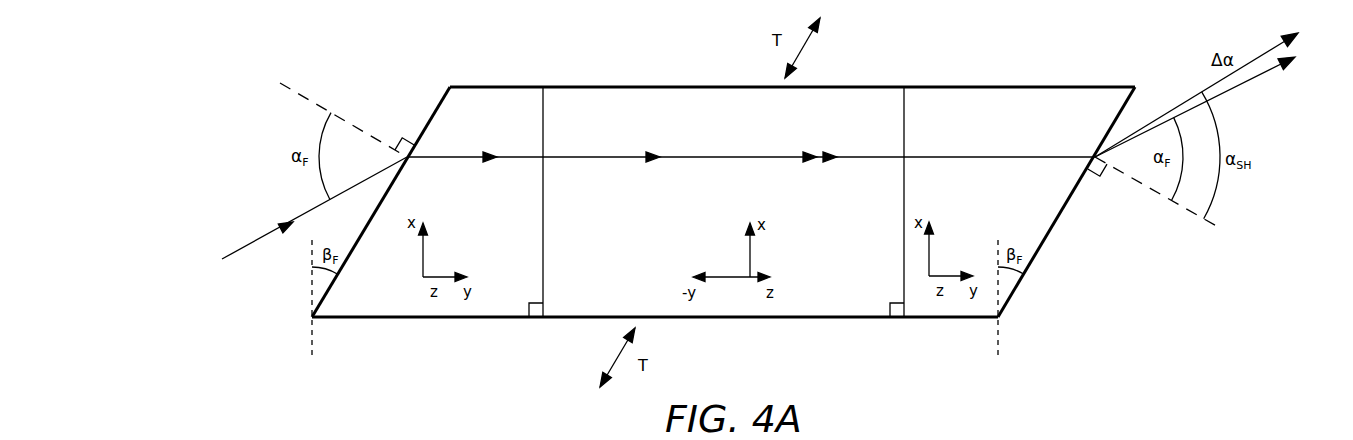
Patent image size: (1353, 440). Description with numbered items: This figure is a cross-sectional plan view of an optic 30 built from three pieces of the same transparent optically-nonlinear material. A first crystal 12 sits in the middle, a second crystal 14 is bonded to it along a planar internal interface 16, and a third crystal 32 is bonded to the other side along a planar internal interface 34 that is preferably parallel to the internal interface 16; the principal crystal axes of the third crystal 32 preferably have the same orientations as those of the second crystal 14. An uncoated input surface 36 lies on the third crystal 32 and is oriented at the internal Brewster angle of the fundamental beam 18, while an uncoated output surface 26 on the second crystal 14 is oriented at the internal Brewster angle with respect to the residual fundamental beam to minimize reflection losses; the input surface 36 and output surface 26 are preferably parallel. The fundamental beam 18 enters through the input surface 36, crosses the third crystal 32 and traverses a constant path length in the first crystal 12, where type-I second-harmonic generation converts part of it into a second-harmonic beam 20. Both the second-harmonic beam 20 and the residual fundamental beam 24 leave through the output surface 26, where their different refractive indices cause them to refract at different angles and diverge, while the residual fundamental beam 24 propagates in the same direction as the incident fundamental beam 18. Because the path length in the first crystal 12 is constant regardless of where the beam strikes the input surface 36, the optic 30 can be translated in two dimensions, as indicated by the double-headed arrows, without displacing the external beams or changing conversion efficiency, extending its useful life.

The optic 30 is at (228, 72).
The third crystal 32 is at (427, 202).
The first crystal 12 is at (723, 202).
The second crystal 14 is at (1019, 202).
The input surface 36 is at (434, 112).
The output surface 26 is at (1050, 232).
The planar internal interface 34 is at (545, 125).
The planar internal interface 16 is at (906, 125).
The fundamental beam 18 is at (255, 235).
The second-harmonic beam 20 is at (1255, 58).
The residual fundamental beam 24 is at (1268, 68).